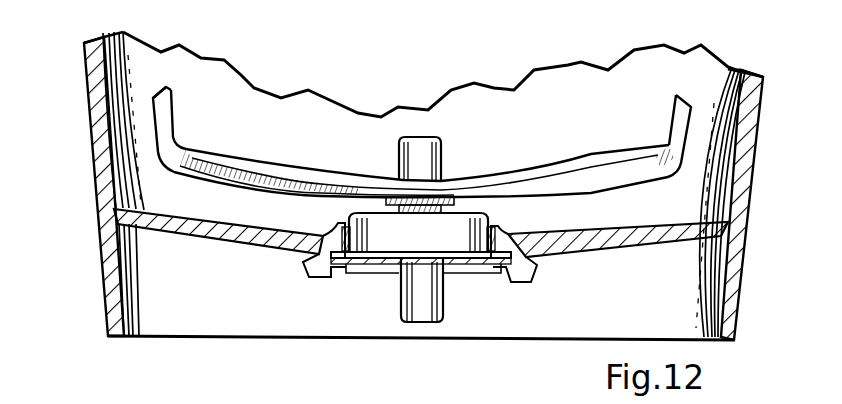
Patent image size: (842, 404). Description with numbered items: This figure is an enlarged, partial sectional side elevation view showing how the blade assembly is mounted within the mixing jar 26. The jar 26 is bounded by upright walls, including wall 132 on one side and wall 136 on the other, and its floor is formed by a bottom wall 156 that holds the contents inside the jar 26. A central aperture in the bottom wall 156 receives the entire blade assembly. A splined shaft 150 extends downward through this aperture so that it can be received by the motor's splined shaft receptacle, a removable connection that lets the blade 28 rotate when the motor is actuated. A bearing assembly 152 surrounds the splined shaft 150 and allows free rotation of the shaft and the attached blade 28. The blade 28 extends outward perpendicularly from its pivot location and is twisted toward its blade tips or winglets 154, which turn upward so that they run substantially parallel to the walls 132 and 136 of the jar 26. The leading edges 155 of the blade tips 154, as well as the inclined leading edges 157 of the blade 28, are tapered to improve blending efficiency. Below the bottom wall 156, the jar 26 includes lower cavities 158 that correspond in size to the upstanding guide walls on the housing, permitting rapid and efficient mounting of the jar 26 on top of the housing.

The jar 26 is at (746, 183).
The blade 28 is at (483, 168).
The wall 132 is at (83, 152).
The wall 136 is at (757, 70).
The splined shaft 150 is at (411, 315).
The bearing assembly 152 is at (476, 202).
The blade tips or winglets 154 is at (153, 114).
The leading edges of blade tips 155 is at (161, 95).
The bottom wall 156 is at (178, 219).
The inclined leading edges 157 is at (250, 151).
The lower cavities 158 is at (146, 272).